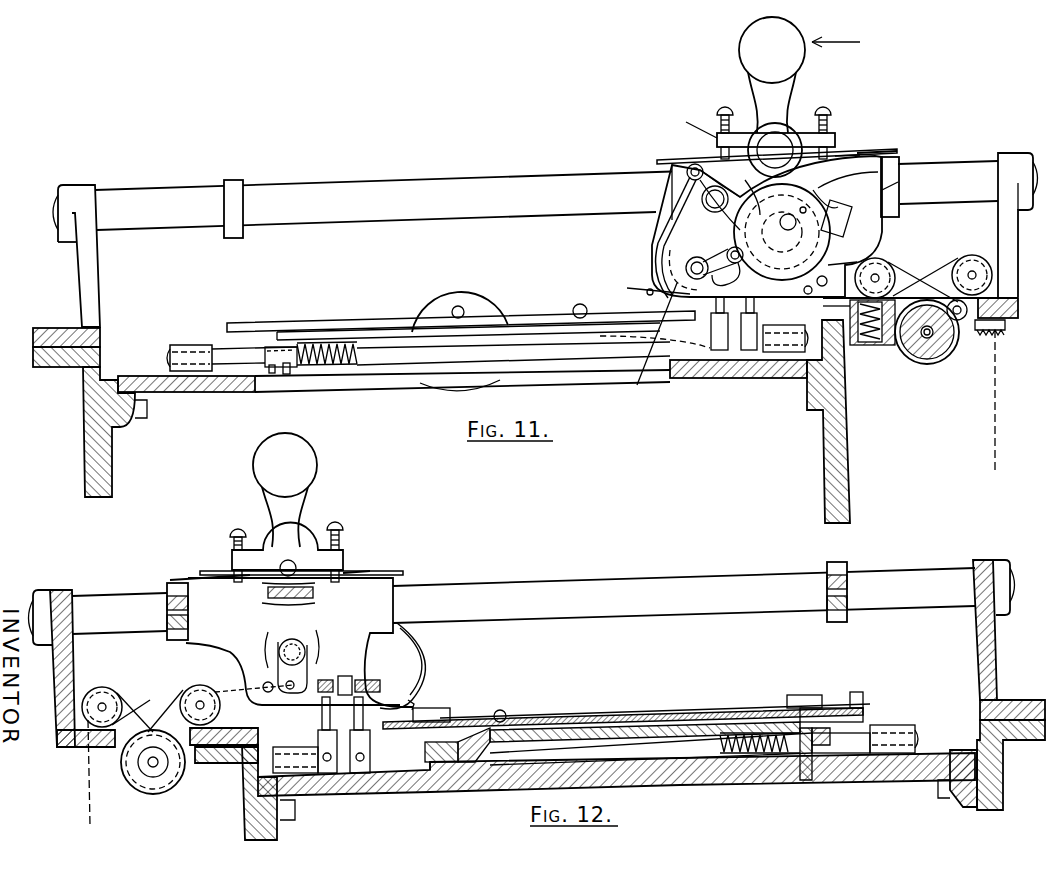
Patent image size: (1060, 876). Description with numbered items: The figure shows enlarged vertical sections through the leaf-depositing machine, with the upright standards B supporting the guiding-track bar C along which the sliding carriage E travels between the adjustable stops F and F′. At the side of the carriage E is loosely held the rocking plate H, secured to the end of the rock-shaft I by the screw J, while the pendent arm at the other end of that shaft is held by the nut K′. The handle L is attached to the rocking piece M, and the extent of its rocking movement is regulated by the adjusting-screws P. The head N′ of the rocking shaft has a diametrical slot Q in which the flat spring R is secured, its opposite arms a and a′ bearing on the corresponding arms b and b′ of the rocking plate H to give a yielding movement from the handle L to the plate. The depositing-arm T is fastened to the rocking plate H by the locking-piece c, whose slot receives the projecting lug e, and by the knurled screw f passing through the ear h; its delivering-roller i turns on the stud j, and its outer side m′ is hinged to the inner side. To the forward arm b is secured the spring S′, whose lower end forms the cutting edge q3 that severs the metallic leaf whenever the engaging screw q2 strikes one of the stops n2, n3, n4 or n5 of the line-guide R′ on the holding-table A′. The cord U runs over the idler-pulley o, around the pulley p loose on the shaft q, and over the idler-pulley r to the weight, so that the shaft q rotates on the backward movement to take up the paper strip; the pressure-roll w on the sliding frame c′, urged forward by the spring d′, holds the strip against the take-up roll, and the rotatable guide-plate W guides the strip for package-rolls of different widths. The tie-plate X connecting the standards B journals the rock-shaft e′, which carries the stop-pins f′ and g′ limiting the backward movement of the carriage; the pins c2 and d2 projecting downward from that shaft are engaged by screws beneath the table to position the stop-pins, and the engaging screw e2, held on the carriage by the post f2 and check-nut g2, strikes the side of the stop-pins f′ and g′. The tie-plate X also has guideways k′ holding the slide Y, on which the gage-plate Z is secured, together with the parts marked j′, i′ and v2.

In FIG. 11, the upright standard B is at (88, 470).
In FIG. 12, the upright standard B is at (245, 817).
In FIG. 11, the parallel bar C is at (448, 186).
In FIG. 12, the parallel bar C is at (626, 590).
In FIG. 11, the adjustable stop F′ is at (232, 192).
In FIG. 12, the adjustable stop F′ is at (843, 566).
In FIG. 11, the tie-plate X is at (172, 393).
In FIG. 12, the tie-plate X is at (455, 785).
In FIG. 11, the bar j′ is at (735, 368).
In FIG. 12, the bar j′ is at (342, 772).
In FIG. 11, the rock-shaft e′ is at (240, 355).
In FIG. 12, the rock-shaft e′ is at (852, 753).
In FIG. 11, the spring i′ is at (322, 341).
In FIG. 12, the spring i′ is at (737, 770).
In FIG. 11, the pin c2 is at (272, 374).
In FIG. 11, the pin d2 is at (288, 374).
In FIG. 11, the gage-plate Z is at (400, 314).
In FIG. 12, the gage-plate Z is at (655, 718).
In FIG. 11, the slide Y is at (532, 328).
In FIG. 12, the slide Y is at (615, 718).
In FIG. 11, the lug v2 is at (477, 307).
In FIG. 11, the arm of spring R a is at (672, 162).
In FIG. 12, the arm of spring R a is at (400, 571).
In FIG. 11, the rocking plate H is at (833, 173).
In FIG. 11, the sliding carriage E is at (848, 163).
In FIG. 11, the adjustable stop F is at (916, 176).
In FIG. 12, the adjustable stop F is at (168, 580).
In FIG. 11, the arm of rocking plate H b′ is at (899, 187).
In FIG. 11, the arm of spring R a′ is at (890, 151).
In FIG. 12, the arm of spring R a′ is at (183, 578).
In FIG. 11, the flat spring R is at (838, 151).
In FIG. 12, the flat spring R is at (355, 569).
In FIG. 11, the outer side of depositing-arm m′ is at (827, 242).
In FIG. 11, the locking-piece c is at (828, 280).
In FIG. 11, the projecting lug e is at (818, 290).
In FIG. 11, the arm of rocking plate H b is at (670, 172).
In FIG. 11, the knurled screw f is at (704, 204).
In FIG. 11, the ear h is at (720, 198).
In FIG. 11, the diametrical slot Q is at (760, 172).
In FIG. 11, the depositing-arm T is at (683, 253).
In FIG. 12, the depositing-arm T is at (388, 703).
In FIG. 11, the guideway k′ is at (697, 262).
In FIG. 12, the guideway k′ is at (810, 770).
In FIG. 11, the stud j is at (730, 250).
In FIG. 11, the delivering-roller i is at (726, 275).
In FIG. 12, the delivering-roller i is at (406, 628).
In FIG. 11, the handle L is at (783, 58).
In FIG. 12, the handle L is at (263, 470).
In FIG. 11, the rocking piece M is at (803, 132).
In FIG. 12, the rocking piece M is at (318, 553).
In FIG. 11, the spring S′ is at (785, 145).
In FIG. 12, the spring S′ is at (428, 678).
In FIG. 11, the adjusting-screw P is at (718, 125).
In FIG. 12, the adjusting-screw P is at (237, 536).
In FIG. 11, the head of rocking shaft N′ is at (687, 121).
In FIG. 12, the head of rocking shaft N′ is at (283, 570).
In FIG. 11, the stop-pin g′ is at (716, 303).
In FIG. 12, the stop-pin g′ is at (344, 735).
In FIG. 11, the stop-pin f′ is at (750, 302).
In FIG. 12, the stop-pin f′ is at (317, 726).
In FIG. 11, the engaging screw q2 is at (644, 283).
In FIG. 12, the engaging screw q2 is at (380, 720).
In FIG. 11, the cutting edge q3 is at (647, 347).
In FIG. 11, the sliding frame c′ is at (1022, 318).
In FIG. 11, the rotatable guide-plate W is at (888, 305).
In FIG. 11, the idler-pulley o is at (880, 266).
In FIG. 12, the idler-pulley o is at (200, 698).
In FIG. 11, the idler-pulley r is at (980, 262).
In FIG. 12, the idler-pulley r is at (103, 700).
In FIG. 11, the pressure-roll w is at (955, 300).
In FIG. 11, the cord U is at (915, 300).
In FIG. 12, the cord U is at (142, 727).
In FIG. 11, the shaft q is at (920, 353).
In FIG. 12, the shaft q is at (150, 767).
In FIG. 11, the pulley p is at (942, 345).
In FIG. 12, the pulley p is at (173, 773).
In FIG. 11, the spring d′ is at (1000, 335).
In FIG. 12, the screw J is at (280, 668).
In FIG. 12, the rock-shaft I is at (296, 642).
In FIG. 12, the nut K′ is at (305, 655).
In FIG. 12, the engaging screw e2 is at (327, 680).
In FIG. 12, the post f2 is at (350, 672).
In FIG. 12, the check-nut g2 is at (370, 680).
In FIG. 12, the stop n3 is at (399, 695).
In FIG. 12, the stop n2 is at (445, 710).
In FIG. 12, the holding-table A′ is at (460, 718).
In FIG. 12, the stop n4 is at (807, 695).
In FIG. 12, the stop n5 is at (860, 692).
In FIG. 12, the line-guide R′ is at (863, 707).